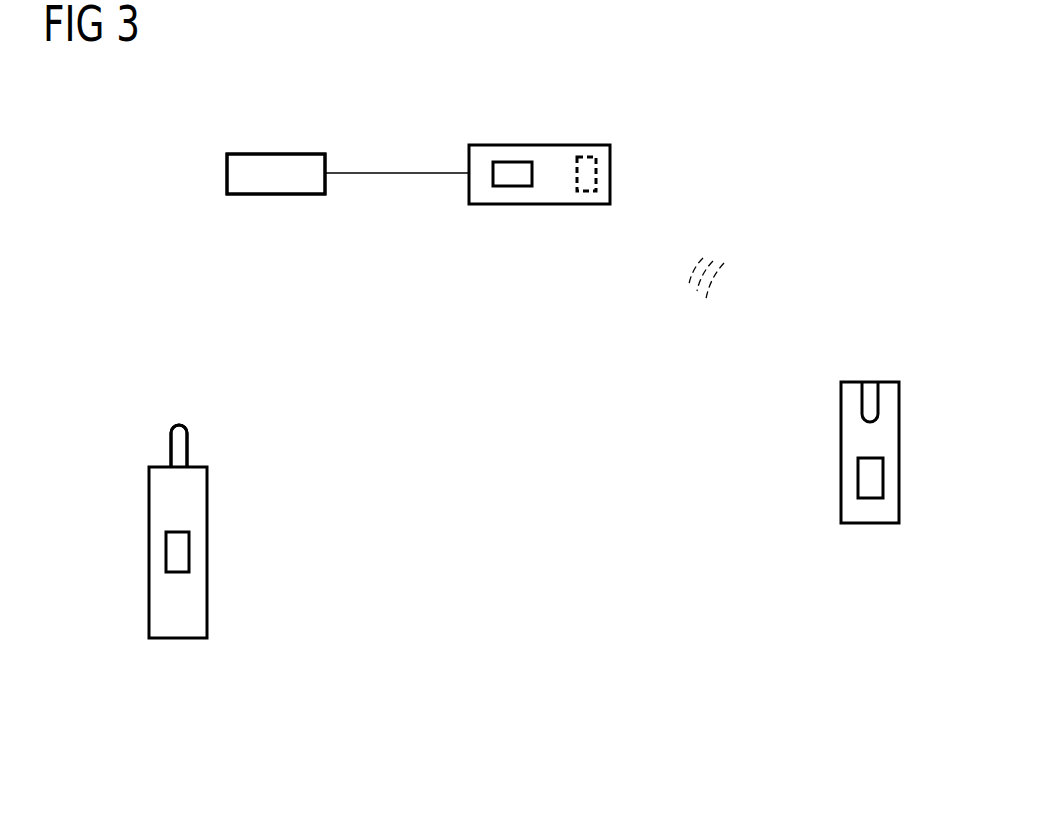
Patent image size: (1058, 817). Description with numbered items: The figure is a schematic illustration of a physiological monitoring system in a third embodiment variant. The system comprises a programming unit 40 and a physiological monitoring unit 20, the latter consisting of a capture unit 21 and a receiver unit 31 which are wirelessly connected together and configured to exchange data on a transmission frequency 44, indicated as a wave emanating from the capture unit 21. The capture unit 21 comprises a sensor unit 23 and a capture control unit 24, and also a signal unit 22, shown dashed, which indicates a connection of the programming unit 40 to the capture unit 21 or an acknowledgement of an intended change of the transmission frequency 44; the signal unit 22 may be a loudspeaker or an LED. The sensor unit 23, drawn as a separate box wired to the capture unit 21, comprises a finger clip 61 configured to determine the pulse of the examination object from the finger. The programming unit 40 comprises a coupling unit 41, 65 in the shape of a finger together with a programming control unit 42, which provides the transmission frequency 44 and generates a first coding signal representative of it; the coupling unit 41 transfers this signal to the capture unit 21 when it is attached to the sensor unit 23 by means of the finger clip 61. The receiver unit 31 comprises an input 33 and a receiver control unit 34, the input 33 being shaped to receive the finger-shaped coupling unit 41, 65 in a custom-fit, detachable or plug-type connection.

The physiological monitoring unit 20 is at (759, 113).
The capture unit 21 is at (440, 118).
The signal unit 22 is at (596, 175).
The sensor unit 23 is at (278, 143).
The capture control unit 24 is at (513, 186).
The receiver unit 31 is at (838, 450).
The input 33 is at (878, 400).
The receiver control unit 34 is at (883, 477).
The programming unit 40 is at (225, 554).
The coupling unit 41 is at (170, 452).
The programming control unit 42 is at (166, 553).
The transmission frequency 44 is at (720, 245).
The finger clip 61 is at (276, 174).
The finger shape of coupling unit 65 is at (179, 446).